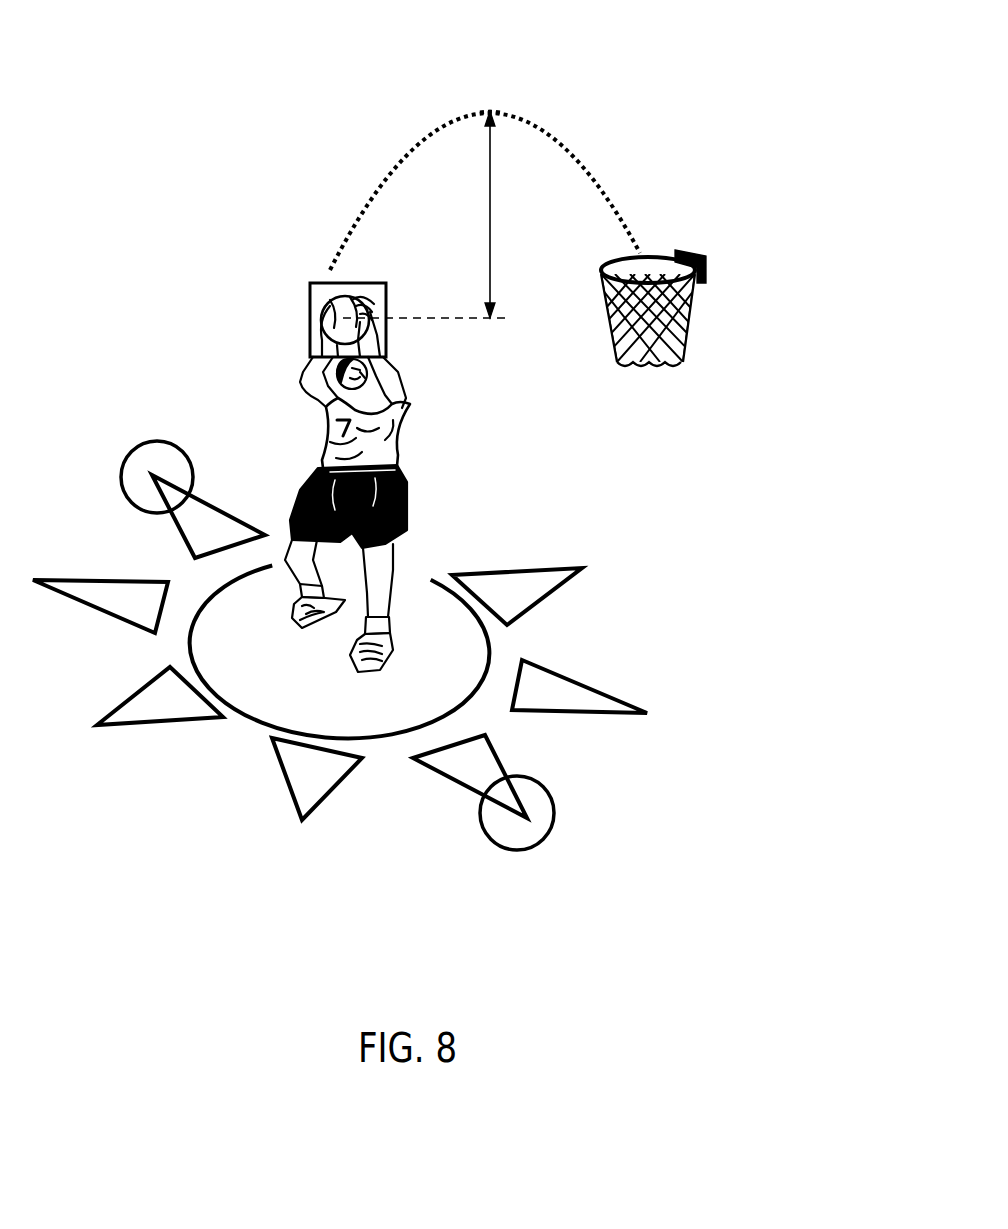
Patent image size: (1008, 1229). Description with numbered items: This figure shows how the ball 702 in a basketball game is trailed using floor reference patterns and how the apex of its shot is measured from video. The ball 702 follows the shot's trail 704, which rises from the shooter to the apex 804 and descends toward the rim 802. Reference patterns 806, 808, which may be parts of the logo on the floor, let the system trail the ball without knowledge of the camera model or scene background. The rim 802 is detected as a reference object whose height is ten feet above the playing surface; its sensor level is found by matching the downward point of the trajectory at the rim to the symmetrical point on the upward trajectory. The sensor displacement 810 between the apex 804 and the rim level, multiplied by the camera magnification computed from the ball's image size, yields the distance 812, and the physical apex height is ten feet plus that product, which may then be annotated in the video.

The ball 702 is at (295, 278).
The shot's trail 704 is at (580, 163).
The rim 802 is at (658, 253).
The apex 804 is at (490, 112).
The reference pattern 806 is at (548, 790).
The reference pattern 808 is at (133, 442).
The sensor displacement 810 is at (487, 220).
The distance 812 is at (460, 322).